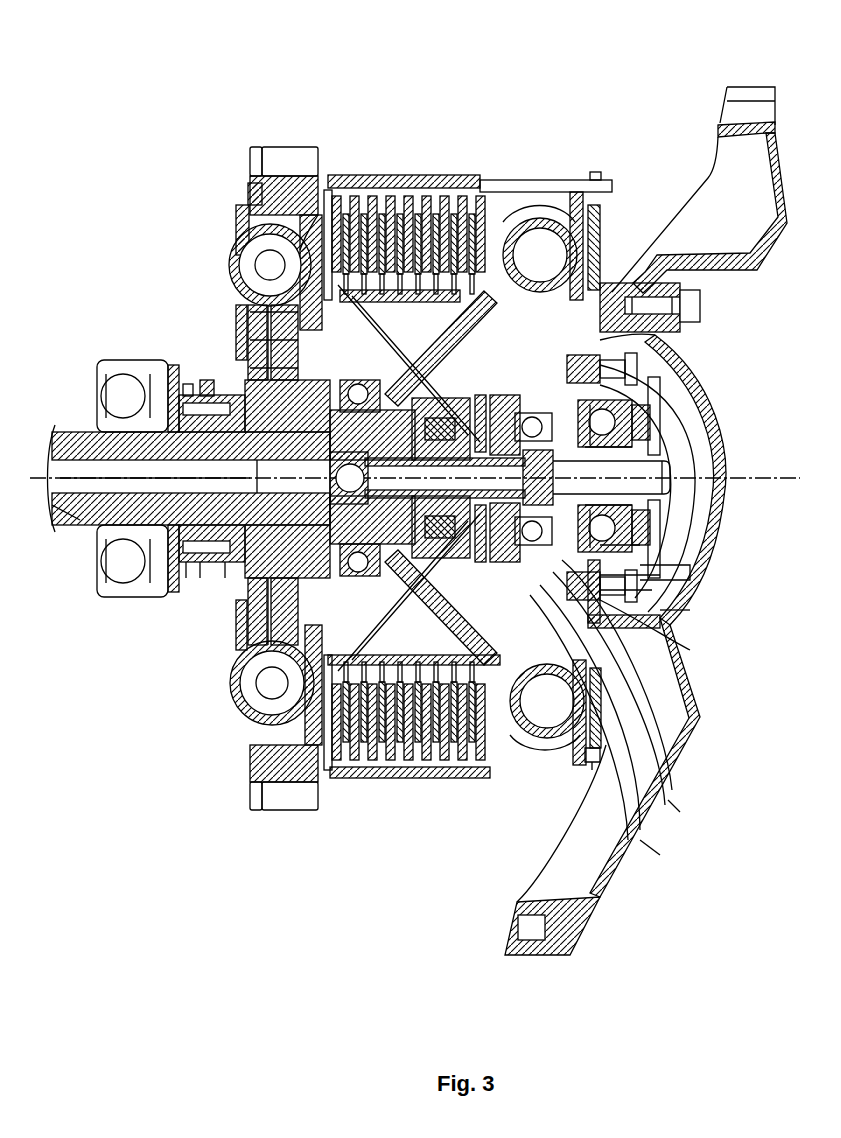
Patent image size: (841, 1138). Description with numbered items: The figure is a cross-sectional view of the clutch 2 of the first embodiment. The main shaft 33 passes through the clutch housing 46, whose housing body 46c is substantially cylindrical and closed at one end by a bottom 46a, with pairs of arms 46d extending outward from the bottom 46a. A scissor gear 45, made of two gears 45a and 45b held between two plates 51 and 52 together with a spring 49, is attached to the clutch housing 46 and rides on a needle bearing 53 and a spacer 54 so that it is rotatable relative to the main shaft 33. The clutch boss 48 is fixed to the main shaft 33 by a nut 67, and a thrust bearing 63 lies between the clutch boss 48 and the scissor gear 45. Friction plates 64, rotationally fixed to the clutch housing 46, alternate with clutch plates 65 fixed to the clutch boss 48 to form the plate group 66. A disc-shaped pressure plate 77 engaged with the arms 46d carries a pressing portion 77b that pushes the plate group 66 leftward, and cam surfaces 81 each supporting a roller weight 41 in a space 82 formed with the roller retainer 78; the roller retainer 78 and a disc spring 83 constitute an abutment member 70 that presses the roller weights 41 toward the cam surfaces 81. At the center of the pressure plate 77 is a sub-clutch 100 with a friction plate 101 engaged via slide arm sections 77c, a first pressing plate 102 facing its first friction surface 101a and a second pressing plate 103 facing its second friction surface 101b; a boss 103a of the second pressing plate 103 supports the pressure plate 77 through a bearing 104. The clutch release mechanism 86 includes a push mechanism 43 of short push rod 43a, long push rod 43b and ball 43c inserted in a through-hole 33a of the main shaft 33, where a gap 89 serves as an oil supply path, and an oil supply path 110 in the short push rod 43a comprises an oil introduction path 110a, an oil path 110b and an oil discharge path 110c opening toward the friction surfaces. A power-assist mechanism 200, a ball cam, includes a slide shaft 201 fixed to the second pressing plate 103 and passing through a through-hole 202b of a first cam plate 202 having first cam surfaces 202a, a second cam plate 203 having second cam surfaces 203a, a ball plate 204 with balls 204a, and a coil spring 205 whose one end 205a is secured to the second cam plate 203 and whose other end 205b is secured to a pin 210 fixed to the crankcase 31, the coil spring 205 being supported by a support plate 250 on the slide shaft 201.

The clutch 2 is at (154, 94).
The crankcase 31 is at (622, 905).
The main shaft 33 is at (82, 424).
The through-hole 33a is at (82, 520).
The roller weight 41 is at (568, 730).
The push mechanism 43 is at (218, 650).
The short push rod 43a is at (222, 562).
The long push rod 43b is at (140, 562).
The ball 43c is at (185, 562).
The scissor gear 45 is at (224, 102).
The gear 45a is at (305, 147).
The gear 45b is at (260, 147).
The clutch housing 46 is at (426, 172).
The bottom 46a is at (298, 212).
The housing body 46c is at (390, 178).
The arm 46d is at (526, 190).
The clutch boss 48 is at (437, 325).
The spring 49 is at (242, 268).
The plate 51 is at (238, 224).
The plate 52 is at (250, 208).
The needle bearing 53 is at (248, 392).
The spacer 54 is at (236, 398).
The thrust bearing 63 is at (362, 586).
The friction plate 64 is at (352, 770).
The clutch plate 65 is at (375, 770).
The plate group 66 is at (428, 833).
The nut 67 is at (478, 560).
The abutment member 70 is at (702, 893).
The pressure plate 77 is at (520, 737).
The pressing portion 77b is at (496, 765).
The slide arm section 77c is at (545, 288).
The roller retainer 78 is at (646, 847).
The cam surface 81 is at (534, 738).
The space 82 is at (682, 760).
The disc spring 83 is at (670, 805).
The clutch release mechanism 86 is at (50, 452).
The gap 89 is at (112, 495).
The sub-clutch 100 is at (445, 650).
The friction plate 101 is at (708, 690).
The first friction surface 101a is at (700, 700).
The second friction surface 101b is at (703, 666).
The first pressing plate 102 is at (692, 740).
The second pressing plate 103 is at (697, 643).
The boss 103a is at (622, 545).
The bearing 104 is at (666, 622).
The oil supply path 110 is at (125, 258).
The oil introduction path 110a is at (250, 330).
The oil path 110b is at (250, 300).
The oil discharge path 110c is at (250, 280).
The power-assist mechanism 200 is at (665, 400).
The slide shaft 201 is at (668, 480).
The first cam plate 202 is at (605, 425).
The first cam surface 202a is at (612, 415).
The through-hole 202b is at (600, 470).
The second cam plate 203 is at (692, 572).
The second cam surface 203a is at (680, 613).
The ball plate 204 is at (603, 453).
The ball 204a is at (656, 392).
The coil spring 205 is at (650, 560).
The one end 205a is at (675, 590).
The other end 205b is at (665, 345).
The pin 210 is at (617, 298).
The support plate 250 is at (592, 513).